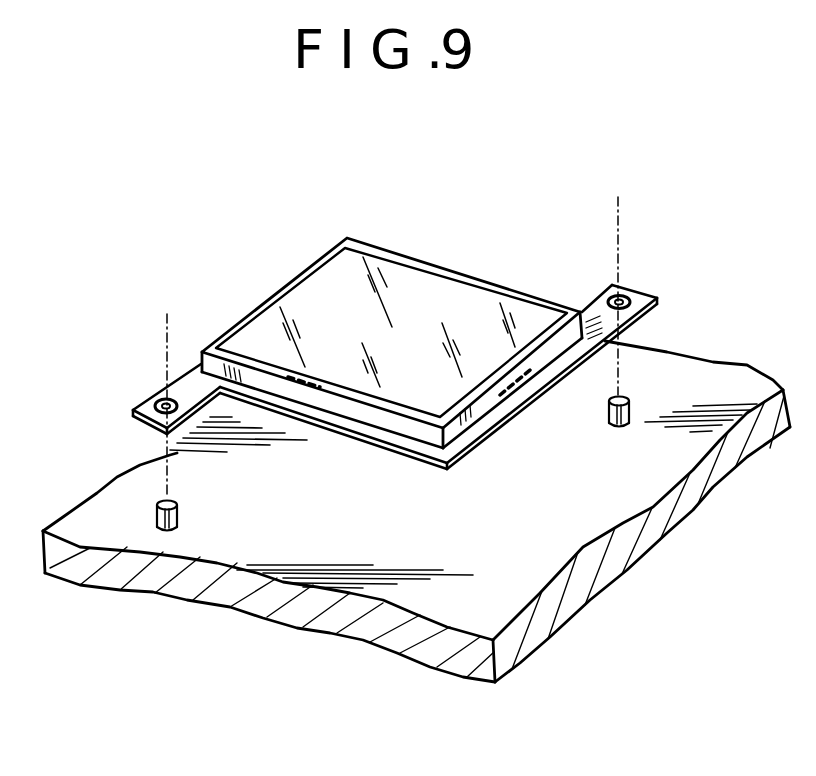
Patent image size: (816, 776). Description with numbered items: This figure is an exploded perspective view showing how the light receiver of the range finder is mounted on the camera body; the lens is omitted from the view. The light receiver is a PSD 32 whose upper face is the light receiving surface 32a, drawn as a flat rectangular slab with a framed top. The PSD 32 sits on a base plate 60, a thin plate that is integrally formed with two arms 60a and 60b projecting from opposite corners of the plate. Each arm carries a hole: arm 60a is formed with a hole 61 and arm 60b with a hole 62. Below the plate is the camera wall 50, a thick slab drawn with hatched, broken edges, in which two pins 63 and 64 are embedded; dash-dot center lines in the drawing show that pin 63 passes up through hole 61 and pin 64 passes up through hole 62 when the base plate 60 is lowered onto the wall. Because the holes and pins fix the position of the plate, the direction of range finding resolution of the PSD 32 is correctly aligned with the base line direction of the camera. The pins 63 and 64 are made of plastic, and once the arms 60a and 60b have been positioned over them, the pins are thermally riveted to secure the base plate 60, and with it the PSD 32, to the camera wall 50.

The PSD 32 is at (259, 280).
The light receiving surface 32a is at (429, 296).
The camera wall 50 is at (573, 547).
The base plate 60 is at (343, 430).
The arm 60a is at (596, 309).
The arm 60b is at (198, 385).
The hole 61 is at (631, 298).
The hole 62 is at (156, 401).
The pin 63 is at (613, 428).
The pin 64 is at (178, 519).